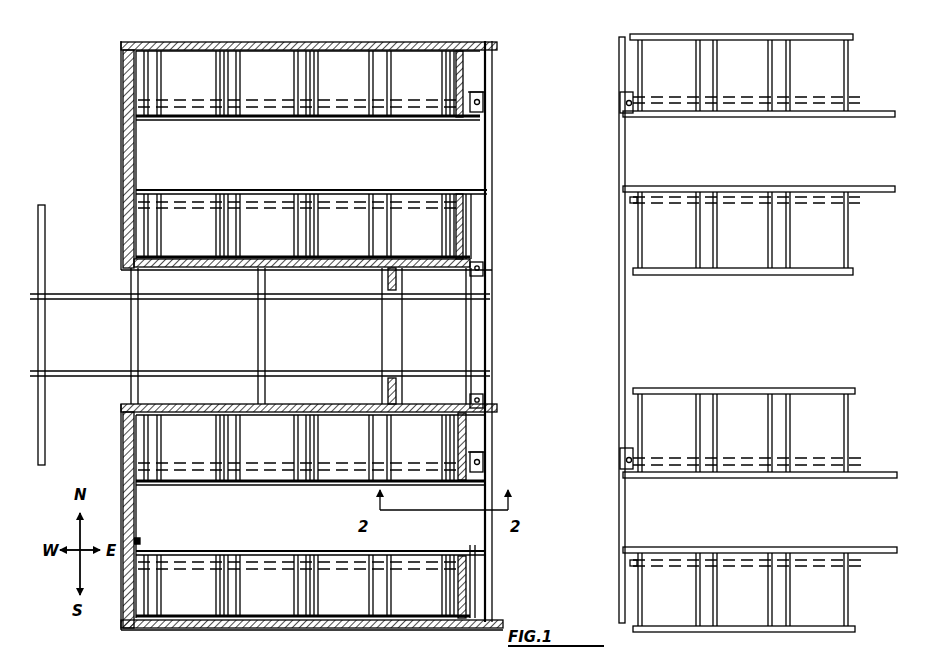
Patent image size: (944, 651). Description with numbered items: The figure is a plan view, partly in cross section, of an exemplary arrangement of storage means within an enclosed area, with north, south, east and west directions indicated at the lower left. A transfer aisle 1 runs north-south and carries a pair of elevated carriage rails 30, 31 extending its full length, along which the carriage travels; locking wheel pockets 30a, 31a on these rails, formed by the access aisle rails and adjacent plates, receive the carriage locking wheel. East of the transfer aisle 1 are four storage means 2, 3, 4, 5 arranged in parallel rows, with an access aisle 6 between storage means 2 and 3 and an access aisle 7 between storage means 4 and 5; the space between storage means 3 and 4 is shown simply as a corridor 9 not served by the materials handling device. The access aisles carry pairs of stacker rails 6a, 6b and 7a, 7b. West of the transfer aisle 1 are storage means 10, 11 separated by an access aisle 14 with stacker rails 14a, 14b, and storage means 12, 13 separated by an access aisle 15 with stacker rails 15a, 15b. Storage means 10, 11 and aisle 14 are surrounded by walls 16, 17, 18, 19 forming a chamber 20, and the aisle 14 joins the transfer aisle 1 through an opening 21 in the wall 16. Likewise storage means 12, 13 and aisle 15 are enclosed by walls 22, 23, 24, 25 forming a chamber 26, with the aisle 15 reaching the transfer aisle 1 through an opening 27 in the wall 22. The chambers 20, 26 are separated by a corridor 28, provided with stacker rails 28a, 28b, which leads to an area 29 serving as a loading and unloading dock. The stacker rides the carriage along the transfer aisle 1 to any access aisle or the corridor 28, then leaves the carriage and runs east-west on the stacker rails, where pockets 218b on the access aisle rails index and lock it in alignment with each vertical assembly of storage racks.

The transfer aisle 1 is at (335, 471).
The storage means 2 is at (718, 75).
The storage means 3 is at (720, 242).
The storage means 4 is at (720, 432).
The storage means 5 is at (720, 594).
The access aisle 6 is at (745, 165).
The stacker rail 6a is at (658, 118).
The stacker rail 6b is at (658, 188).
The access aisle 7 is at (750, 520).
The stacker rail 7a is at (662, 479).
The stacker rail 7b is at (660, 548).
The corridor 9 is at (758, 338).
The storage means 10 is at (316, 87).
The storage means 11 is at (318, 228).
The storage means 12 is at (321, 446).
The storage means 13 is at (321, 589).
The access aisle 14 is at (300, 160).
The stacker rail 14a is at (396, 120).
The stacker rail 14b is at (374, 192).
The access aisle 15 is at (260, 526).
The stacker rail 15a is at (280, 483).
The stacker rail 15b is at (282, 553).
The wall 16 is at (464, 86).
The wall 17 is at (300, 47).
The wall 18 is at (122, 147).
The wall 19 is at (362, 268).
The chamber 20 is at (158, 161).
The opening 21 is at (471, 190).
The wall 22 is at (467, 448).
The wall 23 is at (312, 405).
The wall 24 is at (135, 492).
The wall 25 is at (290, 628).
The chamber 26 is at (146, 541).
The opening 27 is at (480, 552).
The corridor 28 is at (205, 343).
The stacker rail 28a is at (212, 300).
The stacker rail 28b is at (210, 370).
The area 29 is at (68, 322).
The carriage rail 30 is at (493, 224).
The locking wheel pocket 30a is at (485, 103).
The carriage rail 31 is at (619, 295).
The locking wheel pocket 31a is at (618, 103).
The pocket 218b is at (240, 120).